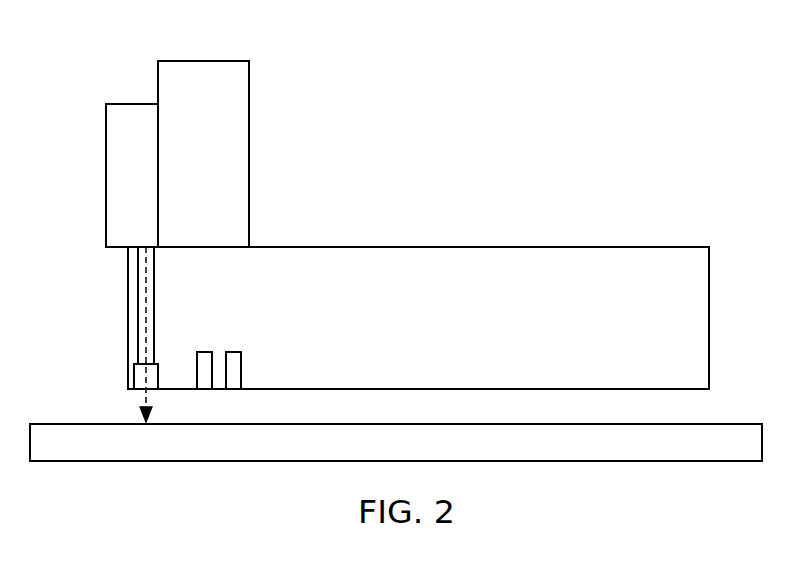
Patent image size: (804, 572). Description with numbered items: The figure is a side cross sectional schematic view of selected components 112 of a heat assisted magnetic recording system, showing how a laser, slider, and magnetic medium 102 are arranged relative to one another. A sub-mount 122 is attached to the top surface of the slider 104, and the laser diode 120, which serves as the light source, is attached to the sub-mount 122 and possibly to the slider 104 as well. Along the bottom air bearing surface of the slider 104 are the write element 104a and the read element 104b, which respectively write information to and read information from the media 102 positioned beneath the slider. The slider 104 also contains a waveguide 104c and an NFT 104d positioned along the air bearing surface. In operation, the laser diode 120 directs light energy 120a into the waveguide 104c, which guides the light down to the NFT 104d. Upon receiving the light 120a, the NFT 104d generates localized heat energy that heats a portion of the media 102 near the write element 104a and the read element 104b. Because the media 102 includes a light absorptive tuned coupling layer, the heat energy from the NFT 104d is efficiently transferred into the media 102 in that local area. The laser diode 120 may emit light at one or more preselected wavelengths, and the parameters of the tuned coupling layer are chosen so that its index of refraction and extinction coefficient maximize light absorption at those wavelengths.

The magnetic medium 102 is at (463, 454).
The slider 104 is at (437, 342).
The write element 104a is at (205, 352).
The read element 104b is at (241, 371).
The waveguide 104c is at (154, 266).
The NFT 104d is at (158, 367).
The selected components of the HAMR system 112 is at (560, 95).
The laser diode 120 is at (128, 103).
The light energy 120a is at (140, 262).
The sub-mount 122 is at (225, 61).